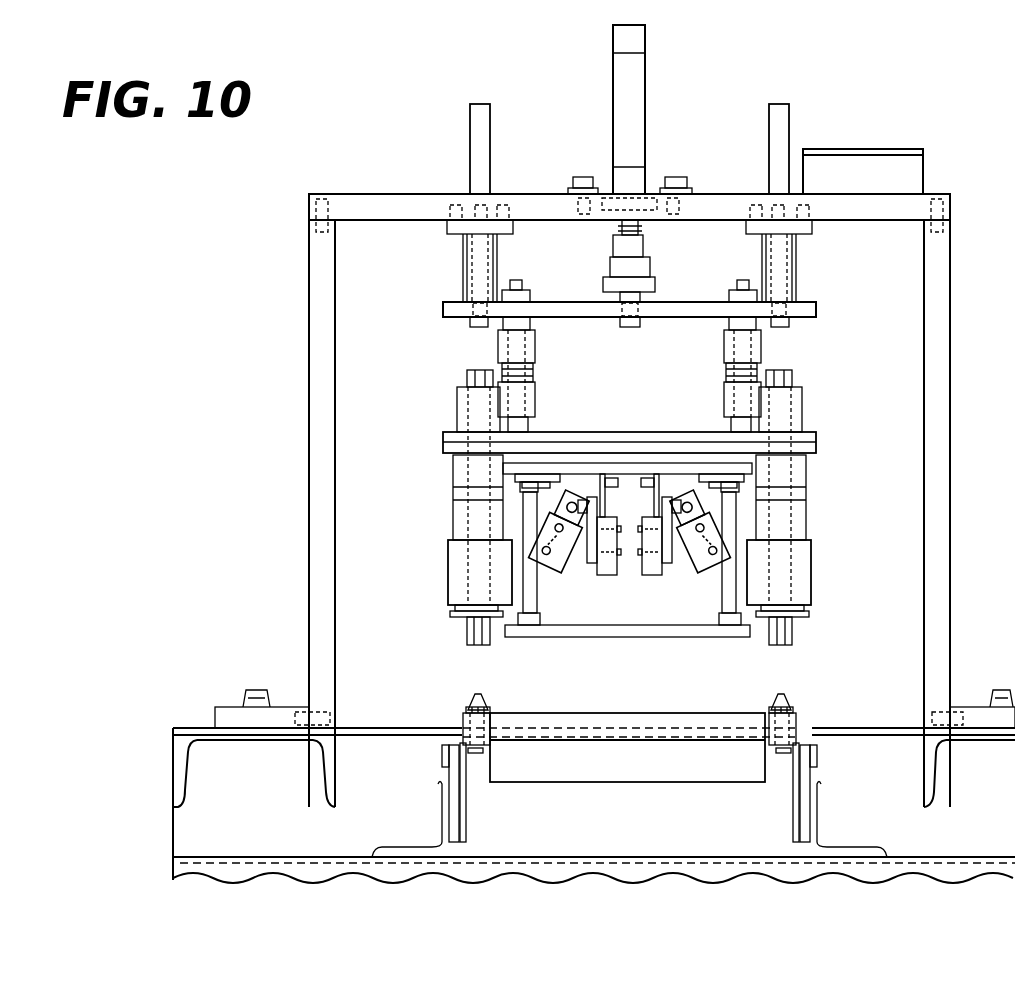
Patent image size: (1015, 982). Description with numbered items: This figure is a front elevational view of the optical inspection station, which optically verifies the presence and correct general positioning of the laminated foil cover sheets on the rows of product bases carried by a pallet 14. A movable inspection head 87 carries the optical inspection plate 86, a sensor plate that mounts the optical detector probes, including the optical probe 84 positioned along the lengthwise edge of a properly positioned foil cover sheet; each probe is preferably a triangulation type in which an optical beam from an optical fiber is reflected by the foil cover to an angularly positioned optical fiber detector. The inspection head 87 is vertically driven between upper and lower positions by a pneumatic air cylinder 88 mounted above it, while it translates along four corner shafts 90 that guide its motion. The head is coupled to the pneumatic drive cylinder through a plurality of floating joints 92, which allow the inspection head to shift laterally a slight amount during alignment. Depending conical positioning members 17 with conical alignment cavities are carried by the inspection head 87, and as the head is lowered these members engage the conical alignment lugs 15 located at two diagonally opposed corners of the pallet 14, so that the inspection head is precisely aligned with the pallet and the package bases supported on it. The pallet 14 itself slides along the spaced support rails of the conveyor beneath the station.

The pallet 14 is at (647, 710).
The conical alignment lug 15 is at (487, 697).
The conical positioning member 17 is at (463, 630).
The optical probe 84 is at (540, 538).
The optical inspection plate 86 is at (626, 462).
The movable inspection head 87 is at (414, 427).
The pneumatic air cylinder 88 is at (645, 93).
The corner shaft 90 is at (489, 148).
The floating joint 92 is at (535, 343).